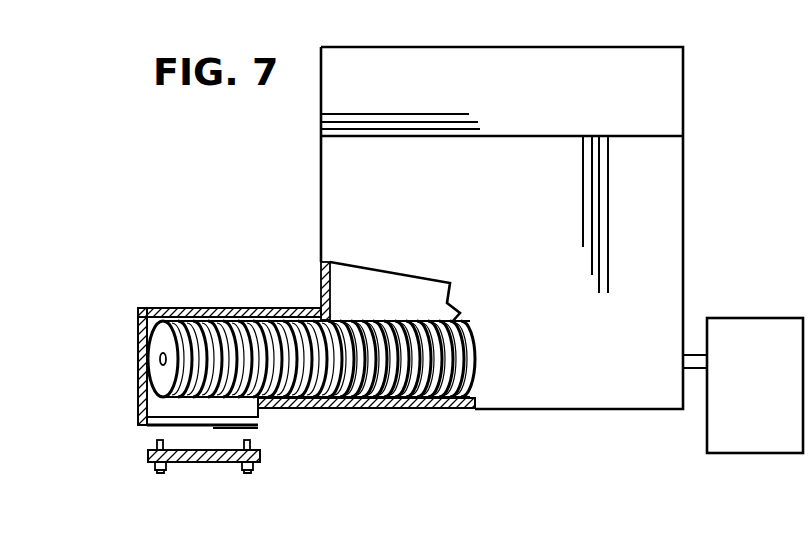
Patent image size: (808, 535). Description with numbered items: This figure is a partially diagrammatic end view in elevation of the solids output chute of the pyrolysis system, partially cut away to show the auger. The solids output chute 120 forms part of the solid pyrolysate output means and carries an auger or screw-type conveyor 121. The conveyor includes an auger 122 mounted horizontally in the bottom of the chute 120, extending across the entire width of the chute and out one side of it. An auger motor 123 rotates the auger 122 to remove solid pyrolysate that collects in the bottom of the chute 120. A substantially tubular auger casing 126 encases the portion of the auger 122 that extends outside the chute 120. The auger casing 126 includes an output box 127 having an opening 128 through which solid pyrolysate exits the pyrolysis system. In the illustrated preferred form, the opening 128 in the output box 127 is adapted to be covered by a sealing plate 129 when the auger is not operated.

The solids output chute 120 is at (483, 228).
The auger or screw-type conveyor 121 is at (264, 277).
The auger 122 is at (333, 408).
The auger motor 123 is at (729, 358).
The auger casing 126 is at (233, 308).
The output box 127 is at (138, 365).
The opening 128 is at (213, 428).
The sealing plate 129 is at (208, 462).